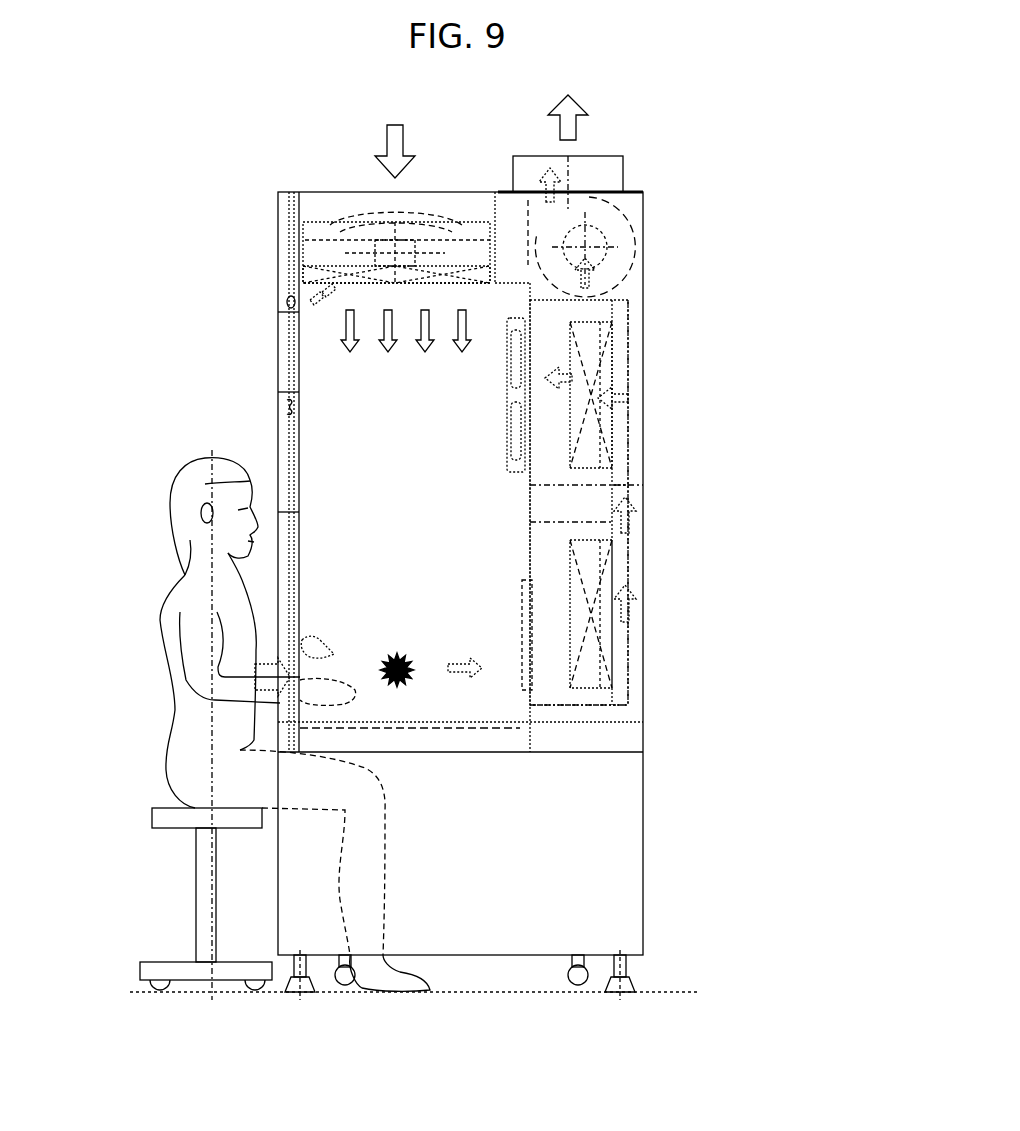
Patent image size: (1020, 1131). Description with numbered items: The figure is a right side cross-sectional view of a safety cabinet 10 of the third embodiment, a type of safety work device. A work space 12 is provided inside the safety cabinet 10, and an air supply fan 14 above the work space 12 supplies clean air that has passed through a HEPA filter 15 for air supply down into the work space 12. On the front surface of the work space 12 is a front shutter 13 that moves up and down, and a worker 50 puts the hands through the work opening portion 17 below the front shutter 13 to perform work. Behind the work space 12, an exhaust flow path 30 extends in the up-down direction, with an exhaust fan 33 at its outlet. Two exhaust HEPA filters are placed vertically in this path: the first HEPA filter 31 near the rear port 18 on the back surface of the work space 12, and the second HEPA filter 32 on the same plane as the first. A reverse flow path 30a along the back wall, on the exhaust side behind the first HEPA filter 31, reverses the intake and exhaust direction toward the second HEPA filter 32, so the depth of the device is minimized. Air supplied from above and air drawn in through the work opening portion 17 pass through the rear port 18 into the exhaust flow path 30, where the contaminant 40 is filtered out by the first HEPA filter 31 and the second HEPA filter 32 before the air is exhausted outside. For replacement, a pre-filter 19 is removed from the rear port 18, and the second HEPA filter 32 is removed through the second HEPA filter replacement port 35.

The safety cabinet 10 is at (433, 190).
The work space 12 is at (368, 447).
The front shutter 13 is at (290, 507).
The air supply fan 14 is at (355, 227).
The HEPA filter for air supply 15 is at (310, 275).
The work opening portion 17 is at (285, 695).
The rear port 18 is at (533, 622).
The pre-filter 19 is at (518, 690).
The exhaust flow path 30 is at (630, 287).
The reverse flow path 30a is at (632, 565).
The first HEPA filter for exhaust 31 is at (613, 667).
The second HEPA filter for exhaust 32 is at (595, 427).
The exhaust fan 33 is at (592, 212).
The second HEPA filter replacement port 35 is at (530, 378).
The contaminant 40 is at (385, 668).
The worker 50 is at (177, 622).